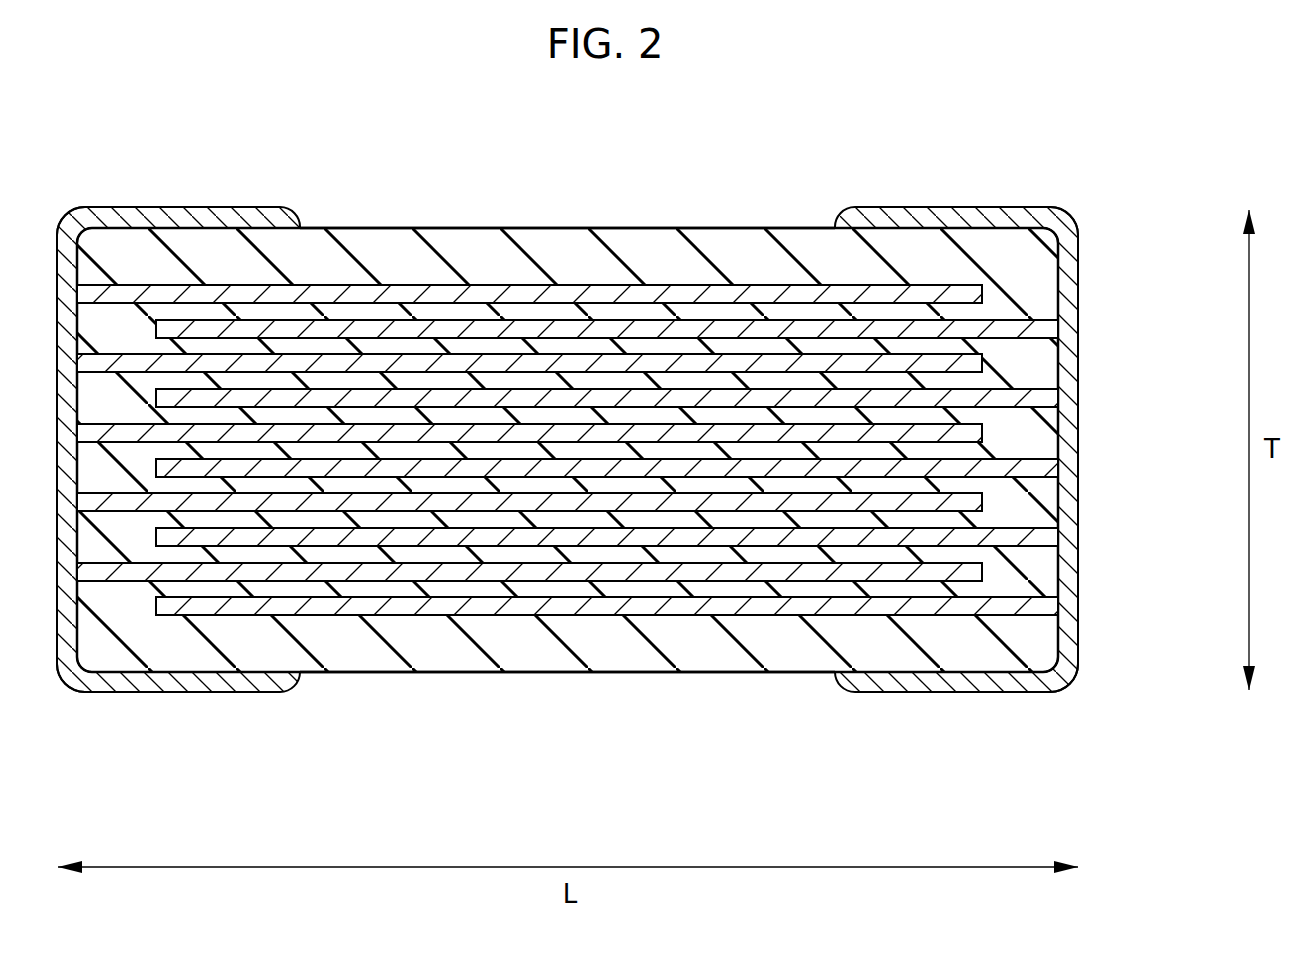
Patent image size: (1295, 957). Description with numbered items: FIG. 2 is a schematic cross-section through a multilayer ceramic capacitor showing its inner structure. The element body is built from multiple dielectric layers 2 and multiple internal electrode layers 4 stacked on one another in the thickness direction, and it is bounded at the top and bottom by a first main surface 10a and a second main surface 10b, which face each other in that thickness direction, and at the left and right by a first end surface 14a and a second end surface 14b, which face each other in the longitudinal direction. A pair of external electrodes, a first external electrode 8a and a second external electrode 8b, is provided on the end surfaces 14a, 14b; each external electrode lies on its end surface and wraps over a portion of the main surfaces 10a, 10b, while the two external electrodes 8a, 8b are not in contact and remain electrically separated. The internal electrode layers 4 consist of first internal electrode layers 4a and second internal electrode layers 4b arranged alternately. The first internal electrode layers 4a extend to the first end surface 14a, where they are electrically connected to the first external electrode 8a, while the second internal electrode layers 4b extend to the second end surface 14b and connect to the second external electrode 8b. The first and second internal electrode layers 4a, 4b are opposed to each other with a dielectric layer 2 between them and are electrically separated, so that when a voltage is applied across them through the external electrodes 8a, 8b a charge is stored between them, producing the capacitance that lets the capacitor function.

The dielectric layer 2 is at (488, 250).
The internal electrode layers 4 is at (567, 360).
The first internal electrode layer 4a is at (573, 292).
The second internal electrode layer 4b is at (633, 328).
The first external electrode 8a is at (265, 206).
The second external electrode 8b is at (1069, 481).
The first main surface 10a is at (731, 199).
The second main surface 10b is at (559, 703).
The first end surface 14a is at (82, 178).
The second end surface 14b is at (1113, 321).